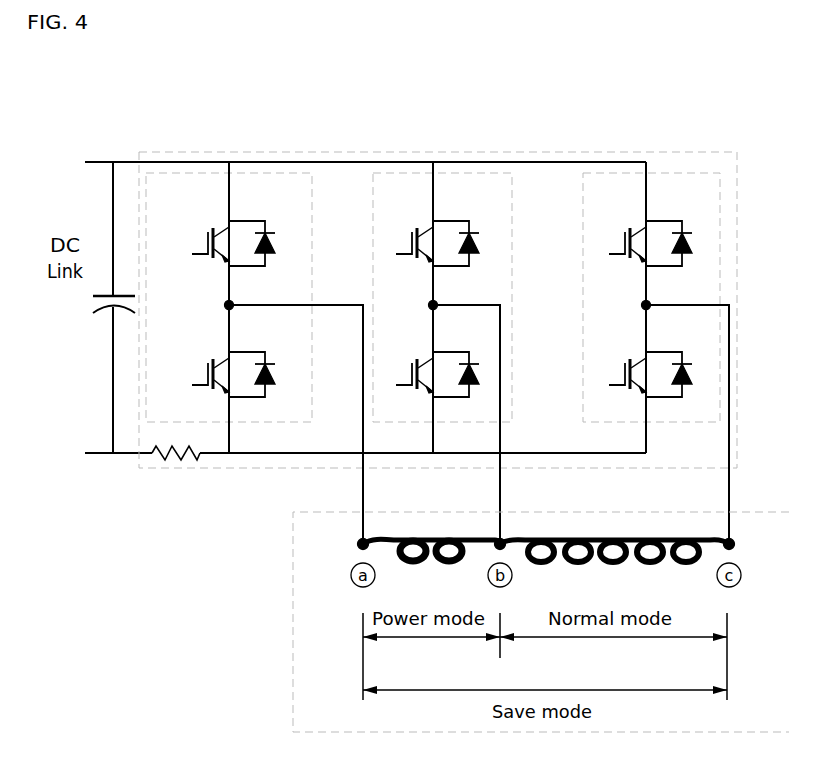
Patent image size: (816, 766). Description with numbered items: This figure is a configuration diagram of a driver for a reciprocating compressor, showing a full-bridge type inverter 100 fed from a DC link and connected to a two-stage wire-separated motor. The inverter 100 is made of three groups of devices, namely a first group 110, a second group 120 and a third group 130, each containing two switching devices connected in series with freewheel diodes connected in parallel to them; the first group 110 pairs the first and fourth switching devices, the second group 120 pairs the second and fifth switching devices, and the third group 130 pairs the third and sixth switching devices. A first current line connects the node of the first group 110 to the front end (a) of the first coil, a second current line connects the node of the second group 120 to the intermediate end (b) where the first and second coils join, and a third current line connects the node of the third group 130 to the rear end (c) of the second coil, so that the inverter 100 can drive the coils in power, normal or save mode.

The full-bridge type inverter 100 is at (717, 152).
The first group 110 is at (188, 173).
The second group 120 is at (513, 195).
The third group 130 is at (622, 173).